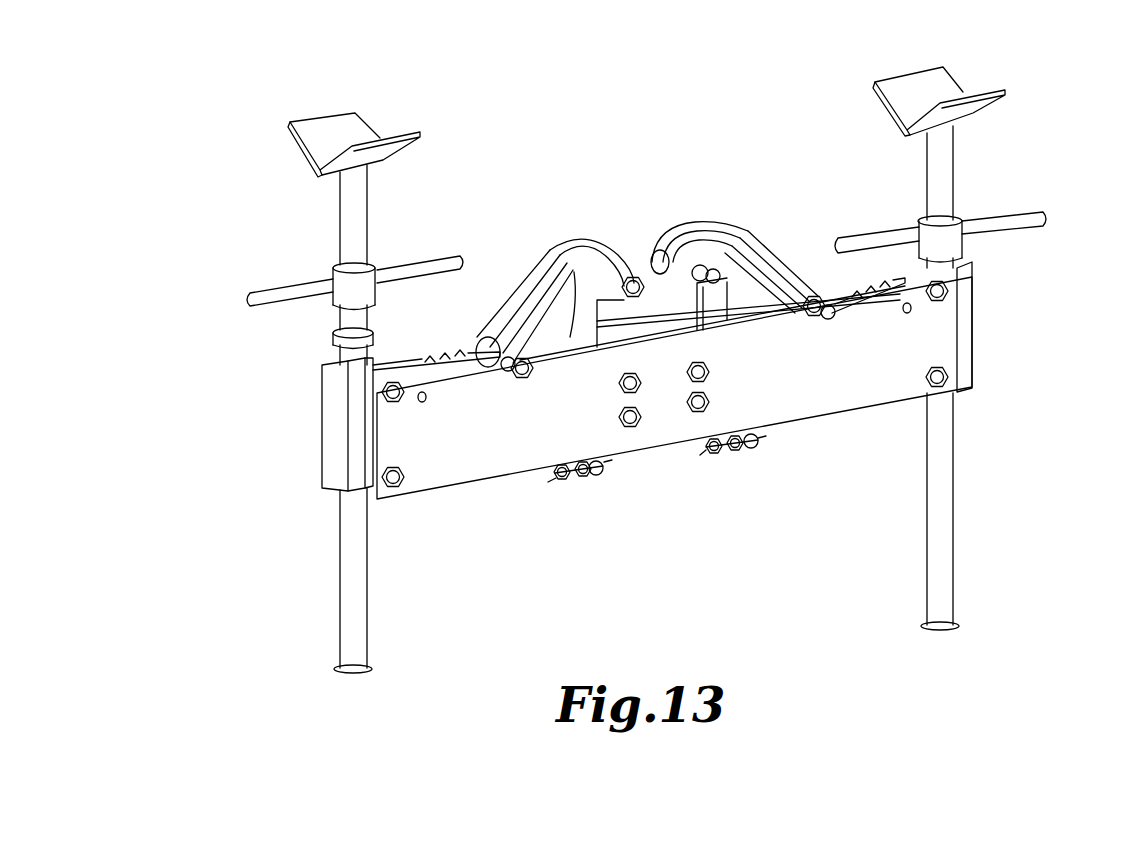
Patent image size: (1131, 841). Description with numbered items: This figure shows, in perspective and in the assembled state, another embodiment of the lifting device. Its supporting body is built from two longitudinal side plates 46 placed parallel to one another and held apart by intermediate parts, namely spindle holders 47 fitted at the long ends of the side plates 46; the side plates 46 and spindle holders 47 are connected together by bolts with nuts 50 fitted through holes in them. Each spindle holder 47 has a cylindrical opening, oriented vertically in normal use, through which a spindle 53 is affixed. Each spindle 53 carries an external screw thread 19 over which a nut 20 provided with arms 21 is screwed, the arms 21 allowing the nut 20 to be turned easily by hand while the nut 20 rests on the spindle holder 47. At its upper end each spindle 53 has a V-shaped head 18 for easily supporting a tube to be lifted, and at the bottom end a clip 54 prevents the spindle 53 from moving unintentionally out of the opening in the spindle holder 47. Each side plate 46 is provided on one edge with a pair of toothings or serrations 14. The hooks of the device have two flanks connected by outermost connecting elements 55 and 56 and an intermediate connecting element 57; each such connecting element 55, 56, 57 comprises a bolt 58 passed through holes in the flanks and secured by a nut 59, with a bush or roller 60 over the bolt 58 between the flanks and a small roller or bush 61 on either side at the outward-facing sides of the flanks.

The toothings or serrations 14 is at (437, 347).
The V-shaped head 18 is at (342, 125).
The screw thread 19 is at (352, 198).
The nut 20 is at (373, 260).
The arms 21 is at (253, 297).
The longitudinal side plates 46 is at (870, 381).
The spindle holders 47 is at (340, 423).
The nuts 50 is at (393, 400).
The spindle 53 is at (258, 194).
The clip 54 is at (337, 673).
The outermost connecting element 55 is at (603, 240).
The outermost connecting element 56 is at (561, 486).
The intermediate connecting element 57 is at (493, 303).
The bolt 58 is at (467, 343).
The nut 59 is at (525, 360).
The bush or roller 60 is at (520, 285).
The small roller or bush 61 is at (631, 280).